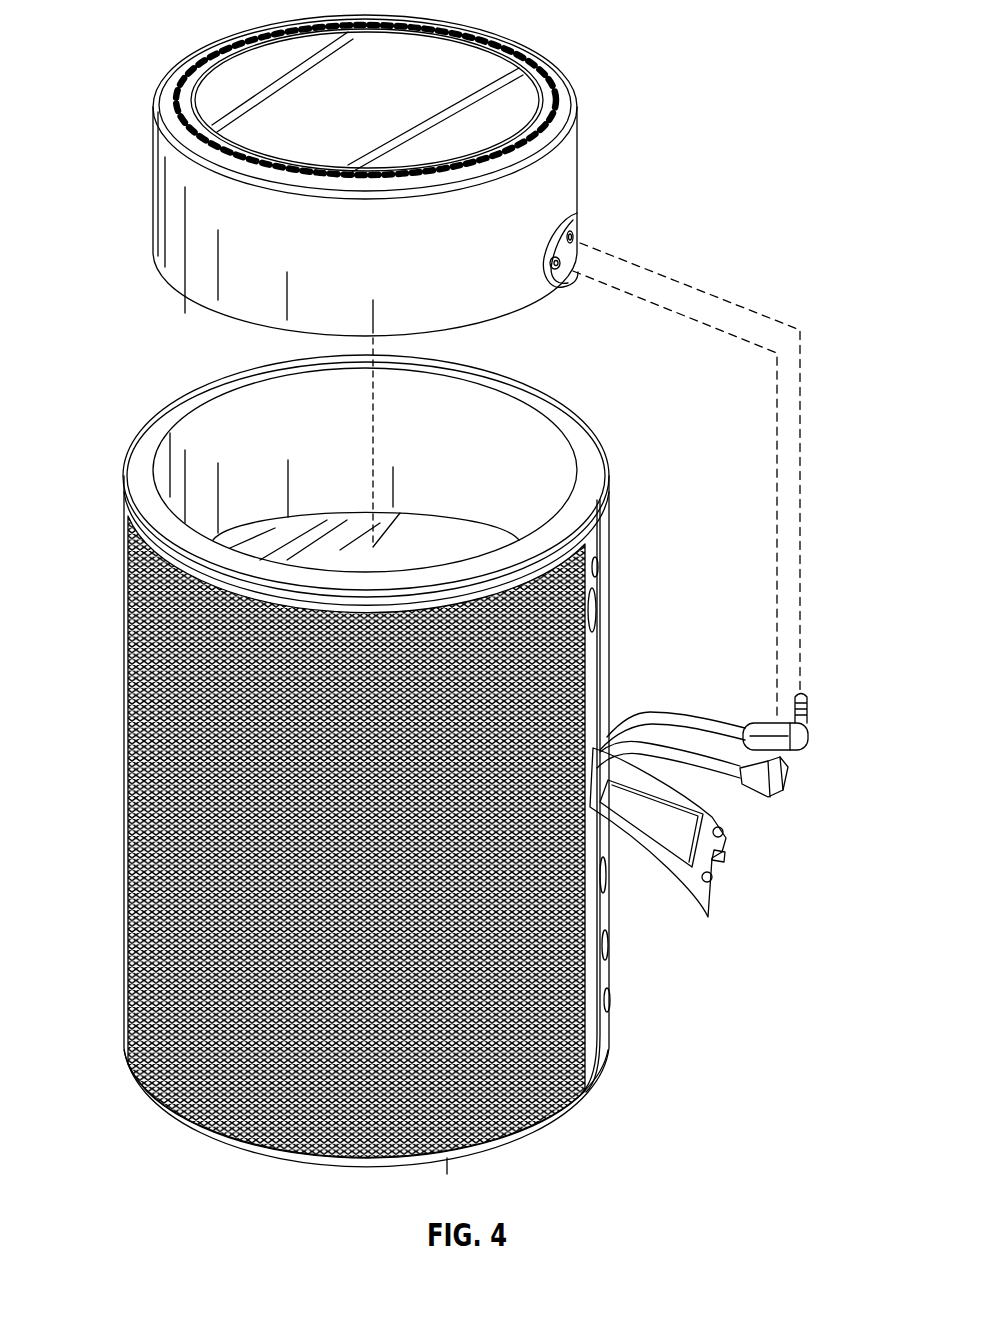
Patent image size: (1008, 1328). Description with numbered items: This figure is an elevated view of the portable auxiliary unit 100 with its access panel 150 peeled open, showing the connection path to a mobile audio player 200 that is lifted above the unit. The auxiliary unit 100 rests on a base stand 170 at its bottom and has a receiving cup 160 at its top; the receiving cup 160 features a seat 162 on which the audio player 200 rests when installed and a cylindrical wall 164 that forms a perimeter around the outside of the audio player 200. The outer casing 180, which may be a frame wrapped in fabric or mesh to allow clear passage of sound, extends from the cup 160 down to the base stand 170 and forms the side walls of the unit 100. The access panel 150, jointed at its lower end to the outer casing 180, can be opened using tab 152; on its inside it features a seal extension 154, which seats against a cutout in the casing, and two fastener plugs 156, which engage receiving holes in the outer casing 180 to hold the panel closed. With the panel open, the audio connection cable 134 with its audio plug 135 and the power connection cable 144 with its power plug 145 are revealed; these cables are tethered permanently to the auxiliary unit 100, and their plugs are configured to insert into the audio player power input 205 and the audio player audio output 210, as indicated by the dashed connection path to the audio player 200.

The auxiliary unit 100 is at (164, 355).
The audio player 200 is at (578, 163).
The audio player power input 205 is at (567, 280).
The audio player audio output 210 is at (573, 237).
The receiving cup 160 is at (161, 417).
The seat 162 is at (454, 555).
The cylindrical wall 164 is at (477, 448).
The outer casing 180 is at (126, 742).
The base stand 170 is at (428, 1173).
The audio connection cable 134 is at (707, 722).
The audio plug 135 is at (808, 706).
The power connection cable 144 is at (700, 757).
The power plug 145 is at (781, 778).
The access panel 150 is at (707, 797).
The tab 152 is at (712, 862).
The seal extension 154 is at (672, 833).
The fastener plugs 156 is at (721, 832).